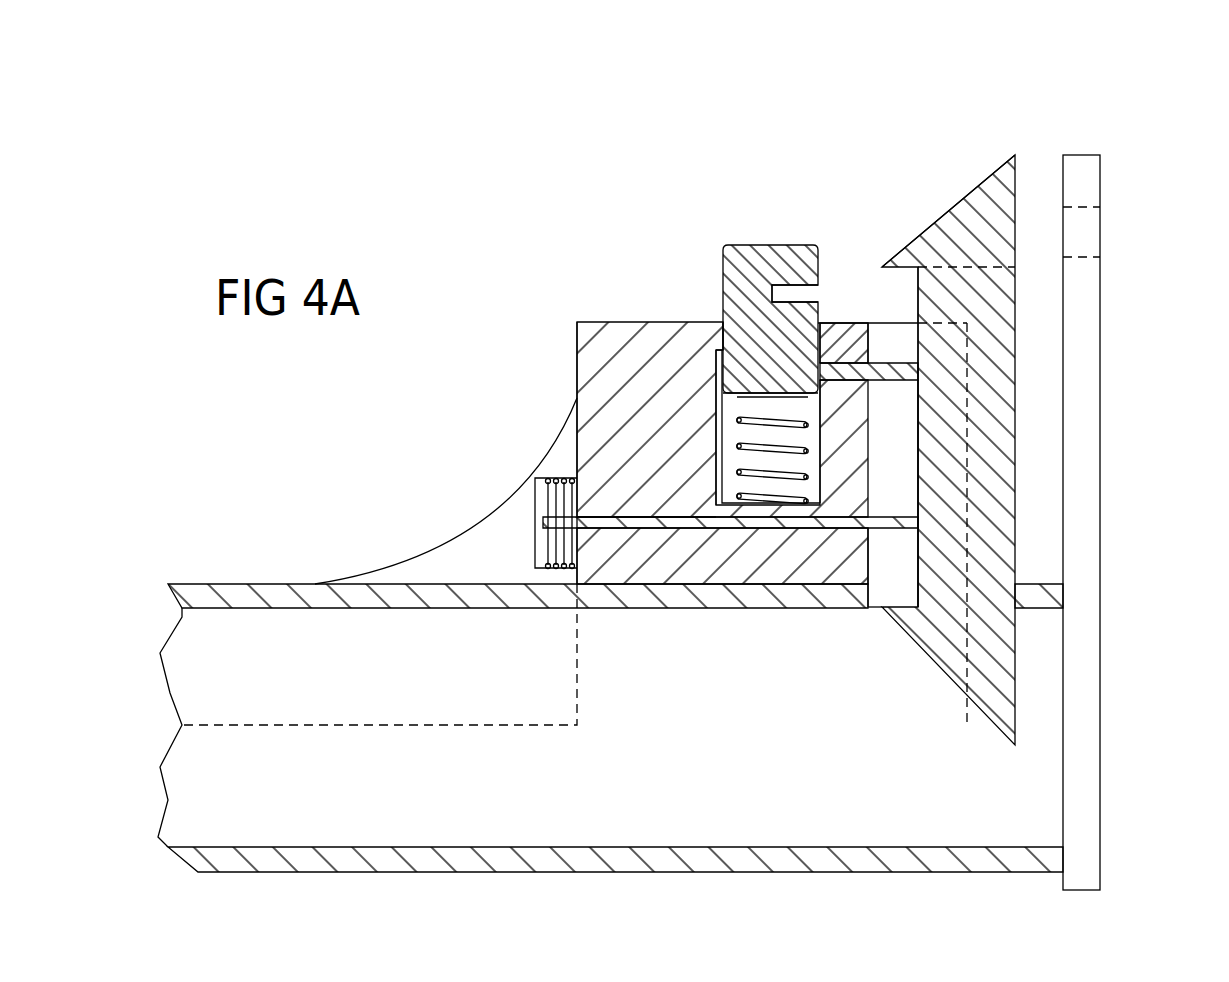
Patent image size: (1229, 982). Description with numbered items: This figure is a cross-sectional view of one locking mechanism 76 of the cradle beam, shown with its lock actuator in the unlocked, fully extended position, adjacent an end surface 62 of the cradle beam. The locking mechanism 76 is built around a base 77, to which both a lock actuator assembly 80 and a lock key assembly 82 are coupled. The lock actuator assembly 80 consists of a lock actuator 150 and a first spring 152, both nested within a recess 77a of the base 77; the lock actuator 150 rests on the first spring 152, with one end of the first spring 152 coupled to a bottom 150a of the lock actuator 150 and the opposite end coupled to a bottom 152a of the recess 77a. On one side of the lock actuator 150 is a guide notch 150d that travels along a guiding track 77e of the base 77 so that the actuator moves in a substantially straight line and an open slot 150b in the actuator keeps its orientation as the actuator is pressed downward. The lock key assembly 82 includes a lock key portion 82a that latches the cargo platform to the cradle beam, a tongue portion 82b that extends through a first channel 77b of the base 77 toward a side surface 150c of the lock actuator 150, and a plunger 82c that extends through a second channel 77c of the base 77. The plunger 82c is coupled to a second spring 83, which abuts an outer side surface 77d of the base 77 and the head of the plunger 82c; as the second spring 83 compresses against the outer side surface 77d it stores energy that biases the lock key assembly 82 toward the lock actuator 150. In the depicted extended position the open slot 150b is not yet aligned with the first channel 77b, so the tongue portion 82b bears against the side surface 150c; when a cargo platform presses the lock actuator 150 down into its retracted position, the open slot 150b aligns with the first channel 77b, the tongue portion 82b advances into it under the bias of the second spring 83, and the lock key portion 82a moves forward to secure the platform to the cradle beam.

The end surface 62 is at (1082, 190).
The locking mechanism 76 is at (796, 343).
The base 77 is at (826, 405).
The recess 77a is at (818, 463).
The first channel 77b is at (905, 368).
The second channel 77c is at (737, 447).
The outer side surface 77d is at (577, 458).
The guiding track 77e is at (720, 383).
The lock actuator assembly 80 is at (707, 323).
The lock key assembly 82 is at (784, 390).
The lock key portion 82a is at (960, 197).
The tongue portion 82b is at (900, 381).
The plunger 82c is at (542, 515).
The second spring 83 is at (553, 573).
The lock actuator 150 is at (774, 273).
The bottom of the lock actuator 150a is at (783, 400).
The open slot 150b is at (826, 290).
The side surface 150c is at (838, 362).
The guide notch 150d is at (718, 347).
The first spring 152 is at (730, 500).
The bottom of the recess 152a is at (630, 523).